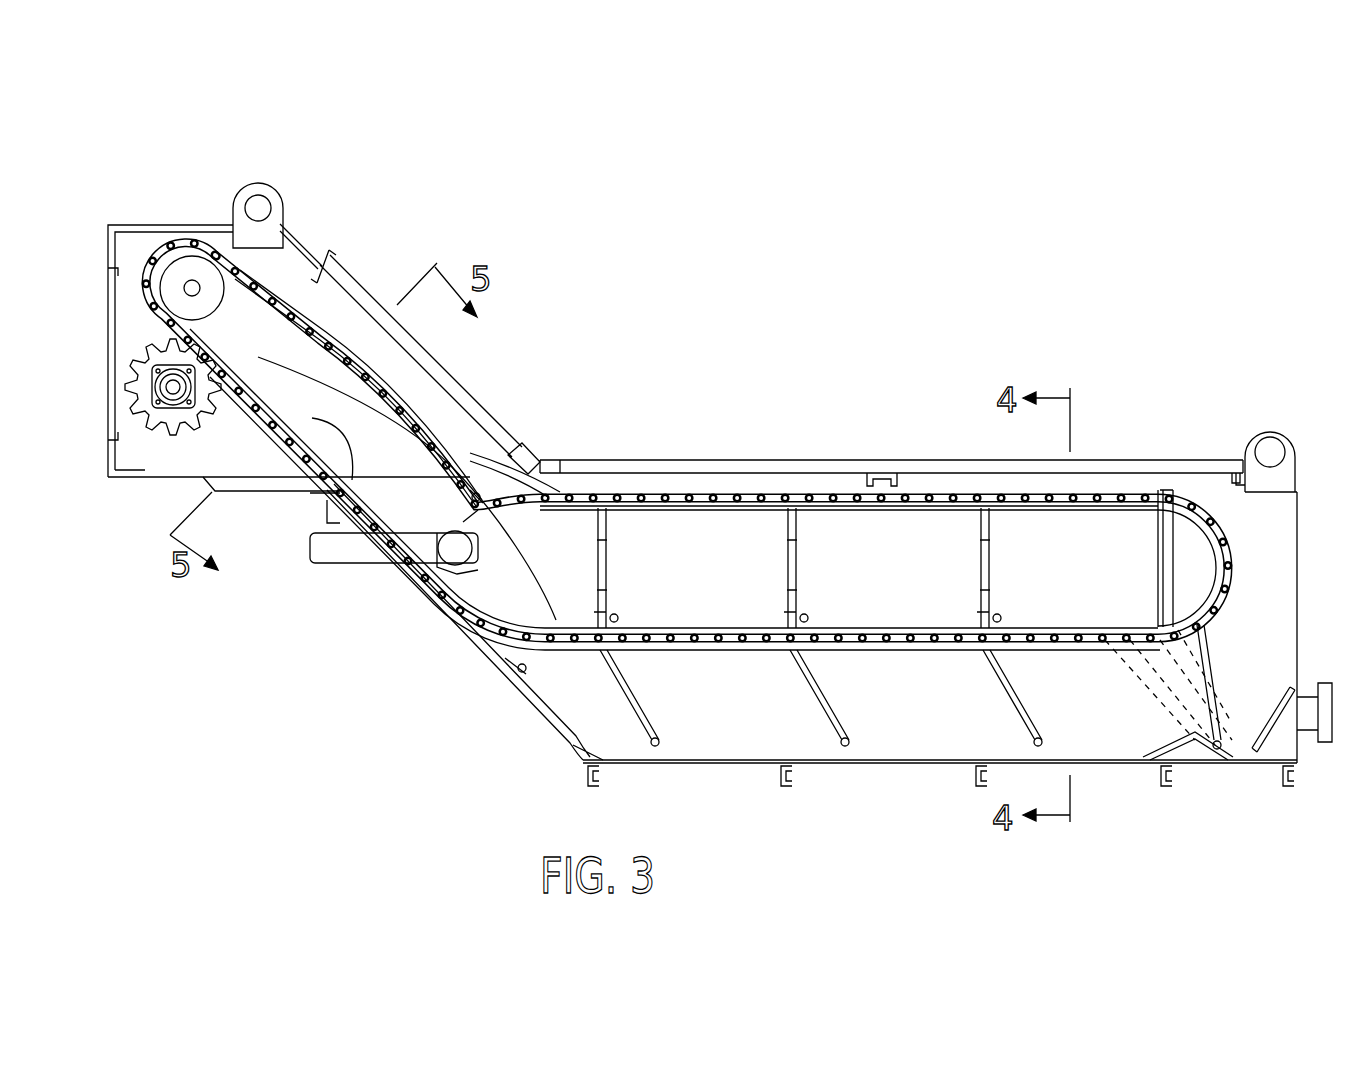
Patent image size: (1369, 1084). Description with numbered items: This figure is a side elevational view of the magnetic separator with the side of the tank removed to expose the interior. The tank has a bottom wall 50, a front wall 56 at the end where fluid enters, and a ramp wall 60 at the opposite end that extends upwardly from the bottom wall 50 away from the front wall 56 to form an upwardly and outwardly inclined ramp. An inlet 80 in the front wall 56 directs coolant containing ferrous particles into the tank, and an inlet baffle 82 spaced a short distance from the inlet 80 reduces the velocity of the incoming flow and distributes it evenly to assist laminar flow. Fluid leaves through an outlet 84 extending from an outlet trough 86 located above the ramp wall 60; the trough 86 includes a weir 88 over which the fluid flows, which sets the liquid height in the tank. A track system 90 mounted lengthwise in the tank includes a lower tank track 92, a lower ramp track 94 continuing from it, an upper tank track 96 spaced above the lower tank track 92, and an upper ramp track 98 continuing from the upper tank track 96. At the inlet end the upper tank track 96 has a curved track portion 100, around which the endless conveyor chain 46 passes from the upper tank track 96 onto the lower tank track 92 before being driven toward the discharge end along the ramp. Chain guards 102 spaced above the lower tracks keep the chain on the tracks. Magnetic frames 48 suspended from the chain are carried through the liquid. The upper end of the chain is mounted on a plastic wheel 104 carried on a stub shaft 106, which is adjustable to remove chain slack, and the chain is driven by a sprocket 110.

The endless conveyor chain 46 is at (628, 490).
The magnetic frame 48 is at (607, 563).
The bottom wall 50 is at (877, 765).
The front wall 56 is at (1302, 543).
The ramp wall 60 is at (490, 656).
The inlet 80 is at (1316, 765).
The inlet baffle 82 is at (1268, 717).
The outlet 84 is at (353, 557).
The outlet trough 86 is at (427, 553).
The weir 88 is at (467, 527).
The track system 90 is at (1086, 498).
The lower tank track 92 is at (747, 651).
The lower ramp track 94 is at (325, 520).
The upper tank track 96 is at (873, 508).
The upper ramp track 98 is at (332, 347).
The curved track portion 100 is at (1213, 522).
The chain guard 102 is at (707, 626).
The plastic wheel 104 is at (165, 290).
The stub shaft 106 is at (192, 287).
The sprocket 110 is at (140, 392).